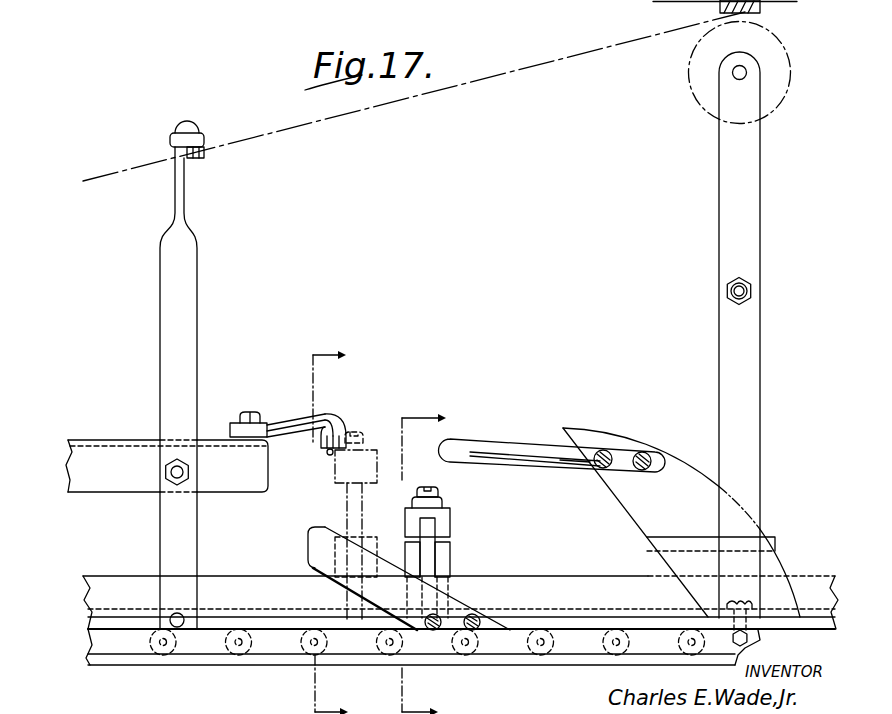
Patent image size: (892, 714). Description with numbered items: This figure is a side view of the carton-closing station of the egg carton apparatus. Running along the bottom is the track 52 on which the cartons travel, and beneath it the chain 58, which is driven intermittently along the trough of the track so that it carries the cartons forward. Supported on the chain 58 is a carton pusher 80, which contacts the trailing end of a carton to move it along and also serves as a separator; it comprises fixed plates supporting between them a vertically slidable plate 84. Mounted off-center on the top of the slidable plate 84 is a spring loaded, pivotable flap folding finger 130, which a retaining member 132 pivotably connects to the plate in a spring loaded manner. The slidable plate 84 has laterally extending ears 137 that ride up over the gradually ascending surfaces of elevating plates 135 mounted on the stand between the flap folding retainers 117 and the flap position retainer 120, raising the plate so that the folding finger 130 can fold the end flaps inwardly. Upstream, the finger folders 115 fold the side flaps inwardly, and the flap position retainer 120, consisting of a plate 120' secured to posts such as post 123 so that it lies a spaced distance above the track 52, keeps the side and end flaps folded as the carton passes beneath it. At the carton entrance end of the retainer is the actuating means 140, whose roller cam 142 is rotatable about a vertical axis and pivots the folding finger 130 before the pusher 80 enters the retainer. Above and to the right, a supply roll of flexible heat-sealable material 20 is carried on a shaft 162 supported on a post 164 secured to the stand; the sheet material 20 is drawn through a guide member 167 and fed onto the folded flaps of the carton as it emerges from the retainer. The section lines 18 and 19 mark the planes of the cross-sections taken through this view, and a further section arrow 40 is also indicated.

The flexible heat-sealable material 20 is at (527, 68).
The track 52 is at (605, 585).
The chain 58 is at (218, 660).
The post 123 is at (184, 308).
The guide member 167 is at (200, 130).
The flap position retainer 120 is at (167, 445).
The plate 120' is at (86, 410).
The actuating means 140 is at (299, 438).
The roller cam 142 is at (327, 416).
The section line 19- 19 is at (346, 394).
The flap folding finger 130 is at (368, 445).
The section line 18- 18 is at (441, 562).
The section line 40 is at (346, 684).
The elevating plate 135 is at (323, 527).
The retaining member 132 is at (440, 493).
The vertically slidable plate 84 is at (432, 526).
The laterally extending ear 137 is at (430, 551).
The carton pusher 80 is at (458, 549).
The flap folding retainer 117 is at (521, 447).
The finger folder 115 is at (622, 440).
The shaft 162 is at (747, 76).
The post 164 is at (746, 222).